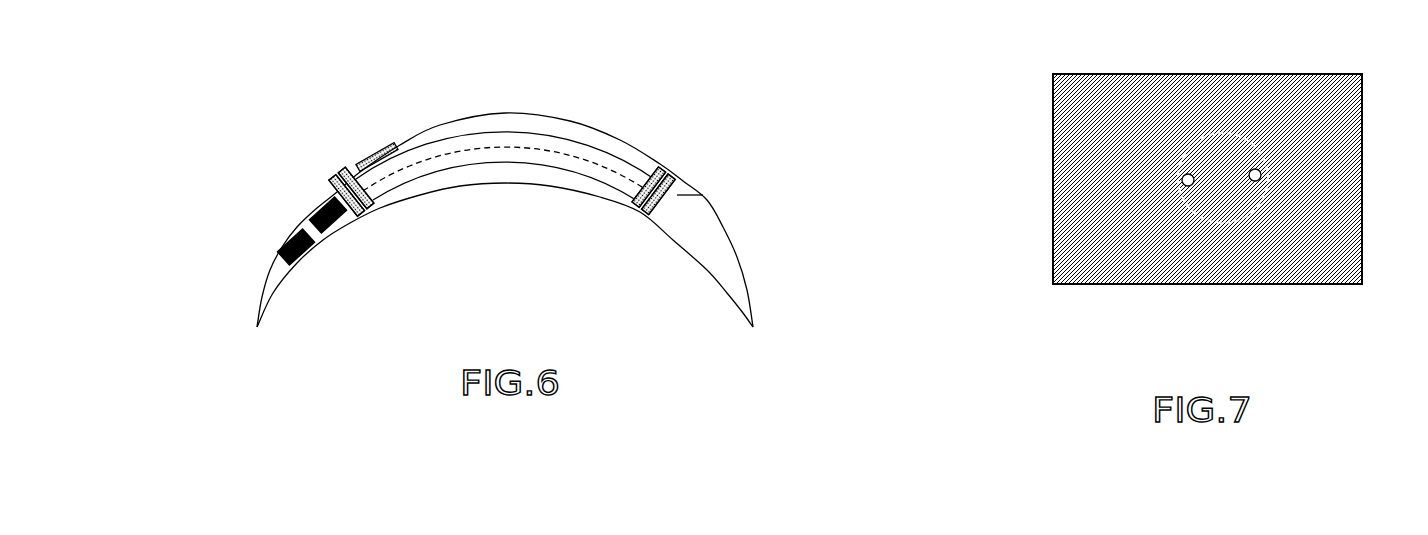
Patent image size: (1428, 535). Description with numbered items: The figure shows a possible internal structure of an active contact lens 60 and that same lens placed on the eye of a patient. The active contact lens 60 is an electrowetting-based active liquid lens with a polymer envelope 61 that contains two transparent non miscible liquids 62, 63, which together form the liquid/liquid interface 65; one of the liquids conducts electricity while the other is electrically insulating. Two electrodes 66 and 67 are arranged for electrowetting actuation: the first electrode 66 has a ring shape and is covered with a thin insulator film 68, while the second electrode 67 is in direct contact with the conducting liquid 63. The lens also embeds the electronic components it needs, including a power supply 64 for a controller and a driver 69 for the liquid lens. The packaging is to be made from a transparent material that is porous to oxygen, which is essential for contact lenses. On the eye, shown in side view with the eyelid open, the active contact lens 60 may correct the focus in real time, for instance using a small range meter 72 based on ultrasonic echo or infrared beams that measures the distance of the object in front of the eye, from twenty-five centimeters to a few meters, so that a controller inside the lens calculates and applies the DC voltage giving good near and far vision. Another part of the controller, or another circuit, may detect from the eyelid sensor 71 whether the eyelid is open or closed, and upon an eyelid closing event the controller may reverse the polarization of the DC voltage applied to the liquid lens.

In FIG. 6, the active contact lens 60 is at (760, 193).
In FIG. 7, the active contact lens 60 is at (1237, 228).
In FIG. 6, the polymer envelope 61 is at (718, 258).
In FIG. 6, the transparent non miscible liquid 62 is at (540, 154).
In FIG. 6, the conducting liquid 63 is at (502, 133).
In FIG. 6, the power supply 64 is at (293, 238).
In FIG. 6, the liquid/liquid interface 65 is at (418, 162).
In FIG. 6, the first electrode 66 is at (343, 229).
In FIG. 6, the second electrode 67 is at (373, 152).
In FIG. 6, the thin insulator film 68 is at (372, 185).
In FIG. 6, the driver 69 is at (323, 205).
In FIG. 7, the eyelid sensor 71 is at (1262, 176).
In FIG. 7, the range meter 72 is at (1182, 181).